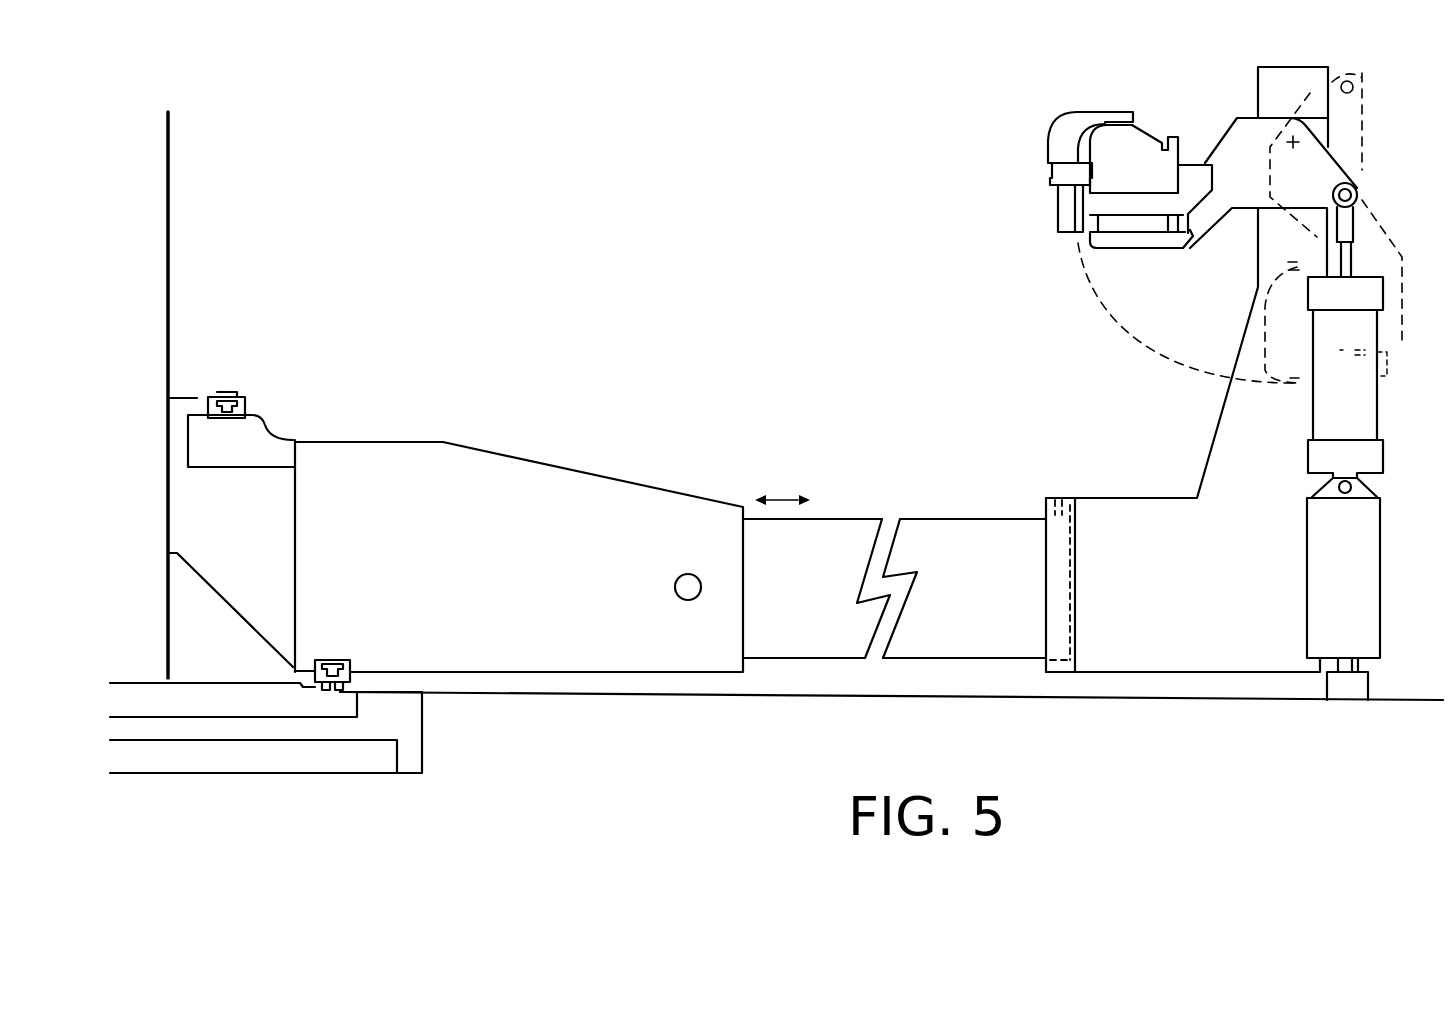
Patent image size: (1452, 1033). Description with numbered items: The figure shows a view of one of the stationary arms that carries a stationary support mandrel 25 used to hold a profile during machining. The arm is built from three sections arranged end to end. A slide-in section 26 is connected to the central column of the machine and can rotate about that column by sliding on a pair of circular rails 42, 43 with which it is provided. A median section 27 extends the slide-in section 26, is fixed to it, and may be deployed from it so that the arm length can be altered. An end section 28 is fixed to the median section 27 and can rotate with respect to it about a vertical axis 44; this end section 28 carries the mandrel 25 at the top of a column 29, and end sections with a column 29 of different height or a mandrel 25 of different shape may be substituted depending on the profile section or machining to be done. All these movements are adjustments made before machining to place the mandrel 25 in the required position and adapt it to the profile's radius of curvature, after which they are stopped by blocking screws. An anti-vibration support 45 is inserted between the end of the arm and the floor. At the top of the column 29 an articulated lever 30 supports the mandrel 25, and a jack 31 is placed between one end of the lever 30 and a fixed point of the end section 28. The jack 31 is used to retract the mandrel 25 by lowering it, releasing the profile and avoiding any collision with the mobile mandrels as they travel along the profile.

The stationary mandrel 25 is at (1015, 201).
The slide-in section 26 is at (573, 487).
The median section 27 is at (826, 535).
The end section 28 is at (1145, 540).
The column 29 is at (1238, 257).
The articulated lever 30 is at (1240, 133).
The jack 31 is at (1352, 550).
The circular rail 42 is at (228, 392).
The circular rail 43 is at (333, 660).
The vertical axis 44 is at (1060, 488).
The anti-vibration support 45 is at (1347, 683).